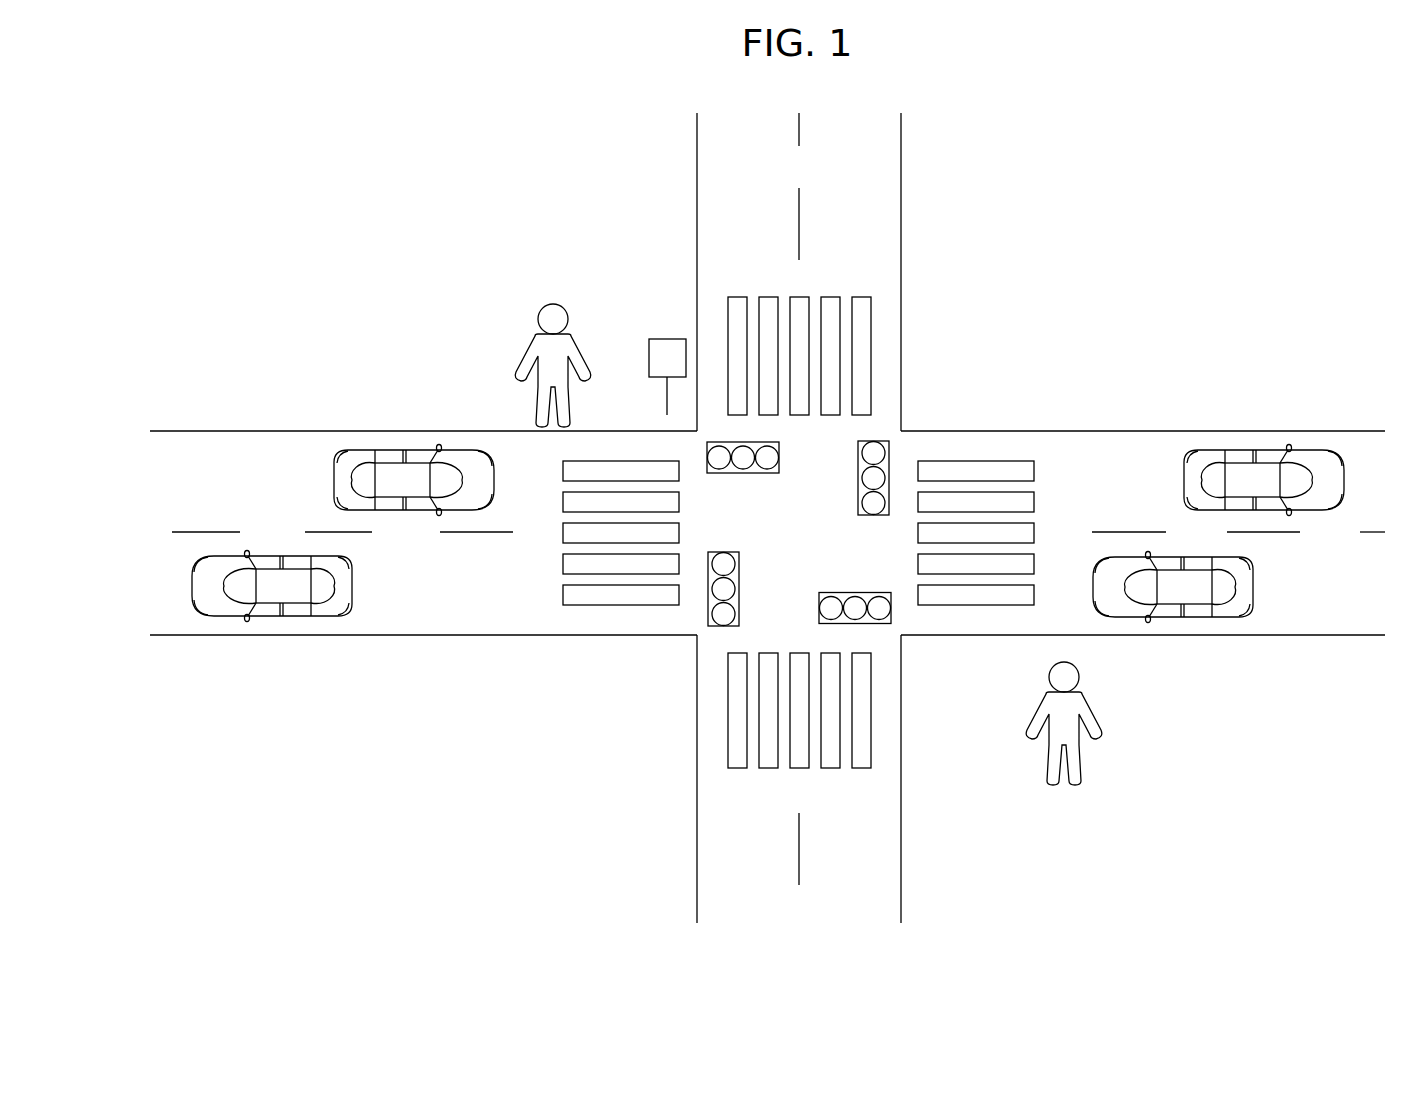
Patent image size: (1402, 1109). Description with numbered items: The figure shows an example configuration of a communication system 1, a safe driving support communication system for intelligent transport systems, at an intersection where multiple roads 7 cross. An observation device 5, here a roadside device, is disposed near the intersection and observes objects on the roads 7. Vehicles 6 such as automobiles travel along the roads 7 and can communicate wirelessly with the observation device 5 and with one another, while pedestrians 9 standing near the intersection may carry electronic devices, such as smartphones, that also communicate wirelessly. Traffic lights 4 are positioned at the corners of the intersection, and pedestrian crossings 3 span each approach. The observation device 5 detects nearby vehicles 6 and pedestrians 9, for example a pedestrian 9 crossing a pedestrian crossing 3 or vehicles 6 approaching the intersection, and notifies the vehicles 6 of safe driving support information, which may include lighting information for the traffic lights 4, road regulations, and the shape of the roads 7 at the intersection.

The communication system 1 is at (1038, 220).
The pedestrian crossing 3 is at (831, 284).
The traffic light 4 is at (732, 474).
The observation device 5 is at (667, 347).
The vehicle 6 is at (392, 472).
The road 7 is at (740, 185).
The pedestrian 9 is at (540, 340).